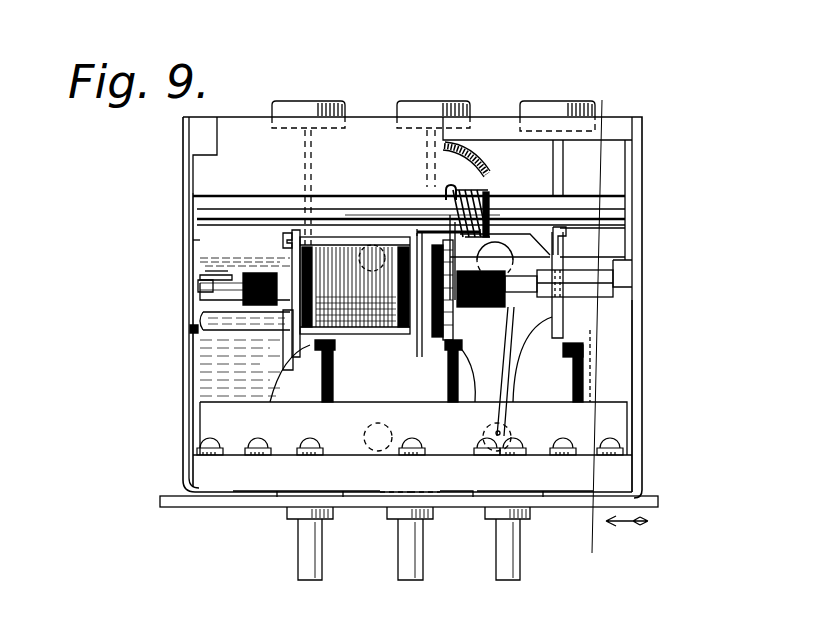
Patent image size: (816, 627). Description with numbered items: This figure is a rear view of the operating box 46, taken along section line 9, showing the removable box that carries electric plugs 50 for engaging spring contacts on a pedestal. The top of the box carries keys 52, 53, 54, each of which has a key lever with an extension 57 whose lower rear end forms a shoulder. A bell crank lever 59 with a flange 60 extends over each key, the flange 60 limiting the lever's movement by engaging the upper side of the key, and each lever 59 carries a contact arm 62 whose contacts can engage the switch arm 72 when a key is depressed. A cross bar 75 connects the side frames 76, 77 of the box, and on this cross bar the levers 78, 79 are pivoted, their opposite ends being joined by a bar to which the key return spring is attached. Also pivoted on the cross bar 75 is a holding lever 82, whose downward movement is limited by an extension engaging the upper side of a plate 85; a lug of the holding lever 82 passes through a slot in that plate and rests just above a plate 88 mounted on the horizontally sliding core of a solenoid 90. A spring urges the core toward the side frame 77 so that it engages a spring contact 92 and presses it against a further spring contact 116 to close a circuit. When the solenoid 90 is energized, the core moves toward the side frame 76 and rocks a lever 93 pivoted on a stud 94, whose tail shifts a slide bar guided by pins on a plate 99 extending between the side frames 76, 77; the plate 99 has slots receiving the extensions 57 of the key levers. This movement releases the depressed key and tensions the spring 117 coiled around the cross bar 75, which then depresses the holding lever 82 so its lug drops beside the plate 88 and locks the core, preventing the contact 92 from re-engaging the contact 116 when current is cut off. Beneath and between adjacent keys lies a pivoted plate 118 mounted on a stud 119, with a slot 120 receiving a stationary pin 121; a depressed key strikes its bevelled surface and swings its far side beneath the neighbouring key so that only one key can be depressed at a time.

The section line 9- 9 is at (616, 320).
The operating box 46 is at (216, 281).
The electric plugs 50 is at (424, 548).
The key 52 is at (560, 100).
The key 53 is at (436, 98).
The key 54 is at (318, 98).
The extension 57 is at (553, 242).
The bell crank lever 59 is at (565, 330).
The flange 60 is at (553, 223).
The contact arm 62 is at (566, 382).
The switch arm 72 is at (432, 612).
The cross bar 75 is at (612, 210).
The side frame 76 is at (183, 417).
The side frame 77 is at (642, 427).
The lever 78 is at (193, 236).
The lever 79 is at (627, 238).
The holding lever 82 is at (446, 195).
The plate 85 is at (427, 223).
The plate 88 is at (455, 313).
The solenoid 90 is at (358, 317).
The spring contact 92 is at (499, 368).
The lever 93 is at (211, 283).
The stud 94 is at (217, 275).
The plate 99 is at (196, 318).
The spring contact 116 is at (518, 362).
The spring 117 is at (458, 192).
The pivoted plate 118 is at (385, 395).
The stud 119 is at (357, 432).
The slot 120 is at (510, 257).
The stationary pin 121 is at (492, 250).